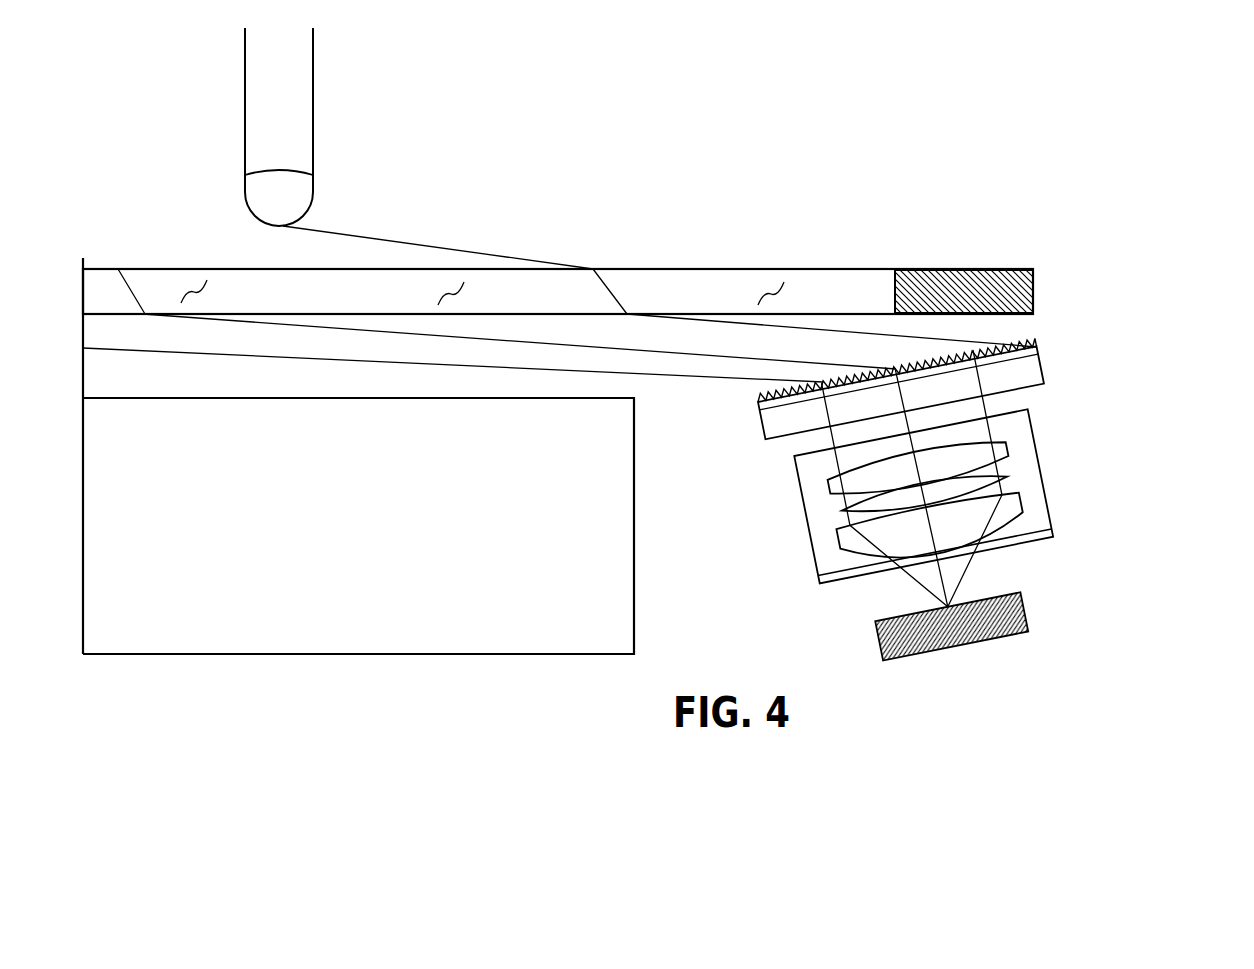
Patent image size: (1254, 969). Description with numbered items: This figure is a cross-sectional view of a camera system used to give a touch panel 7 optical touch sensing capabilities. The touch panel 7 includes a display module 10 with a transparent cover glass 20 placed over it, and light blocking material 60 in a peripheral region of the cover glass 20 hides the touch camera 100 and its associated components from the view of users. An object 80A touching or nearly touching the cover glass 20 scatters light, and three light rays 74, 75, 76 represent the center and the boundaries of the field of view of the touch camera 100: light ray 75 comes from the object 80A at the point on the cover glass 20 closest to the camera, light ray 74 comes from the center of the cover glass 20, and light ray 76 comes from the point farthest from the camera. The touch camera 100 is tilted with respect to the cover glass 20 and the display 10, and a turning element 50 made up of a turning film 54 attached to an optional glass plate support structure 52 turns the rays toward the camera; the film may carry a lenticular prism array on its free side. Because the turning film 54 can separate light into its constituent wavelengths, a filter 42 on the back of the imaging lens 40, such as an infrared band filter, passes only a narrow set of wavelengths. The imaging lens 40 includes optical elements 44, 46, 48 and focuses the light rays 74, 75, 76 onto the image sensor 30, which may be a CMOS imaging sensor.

The touch panel 7 is at (842, 76).
The object 80A is at (310, 93).
The cover member (cover glass) 20 is at (231, 276).
The light blocking material 60 is at (950, 270).
The display module 10 is at (358, 526).
The light ray 74 is at (300, 327).
The light ray 75 is at (700, 322).
The light ray 76 is at (196, 356).
The touch camera 100 is at (984, 501).
The turning element 50 is at (900, 389).
The support structure (glass plate) 52 is at (901, 392).
The turning film 54 is at (896, 370).
The imaging lens 40 is at (923, 496).
The filter 42 is at (934, 552).
The optical element 44 is at (918, 468).
The optical element 46 is at (925, 494).
The optical element 48 is at (932, 531).
The image sensor 30 is at (951, 626).